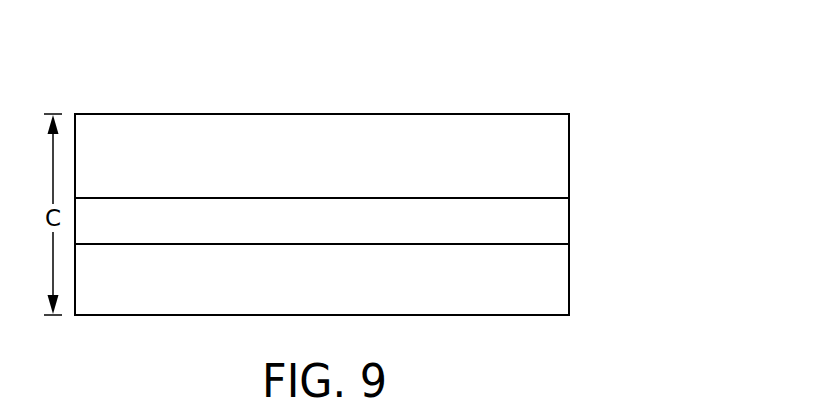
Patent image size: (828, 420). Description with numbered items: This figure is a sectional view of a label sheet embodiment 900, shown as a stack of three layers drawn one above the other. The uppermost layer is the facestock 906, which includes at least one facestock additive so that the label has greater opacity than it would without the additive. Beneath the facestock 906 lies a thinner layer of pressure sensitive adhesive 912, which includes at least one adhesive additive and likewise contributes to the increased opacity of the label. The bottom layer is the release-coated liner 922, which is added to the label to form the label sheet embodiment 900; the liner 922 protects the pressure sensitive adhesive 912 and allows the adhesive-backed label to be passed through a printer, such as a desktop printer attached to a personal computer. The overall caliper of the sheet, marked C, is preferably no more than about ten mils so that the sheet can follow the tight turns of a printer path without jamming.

The label sheet embodiment 900 is at (591, 117).
The facestock 906 is at (560, 163).
The pressure sensitive adhesive 912 is at (560, 225).
The release-coated liner 922 is at (560, 293).